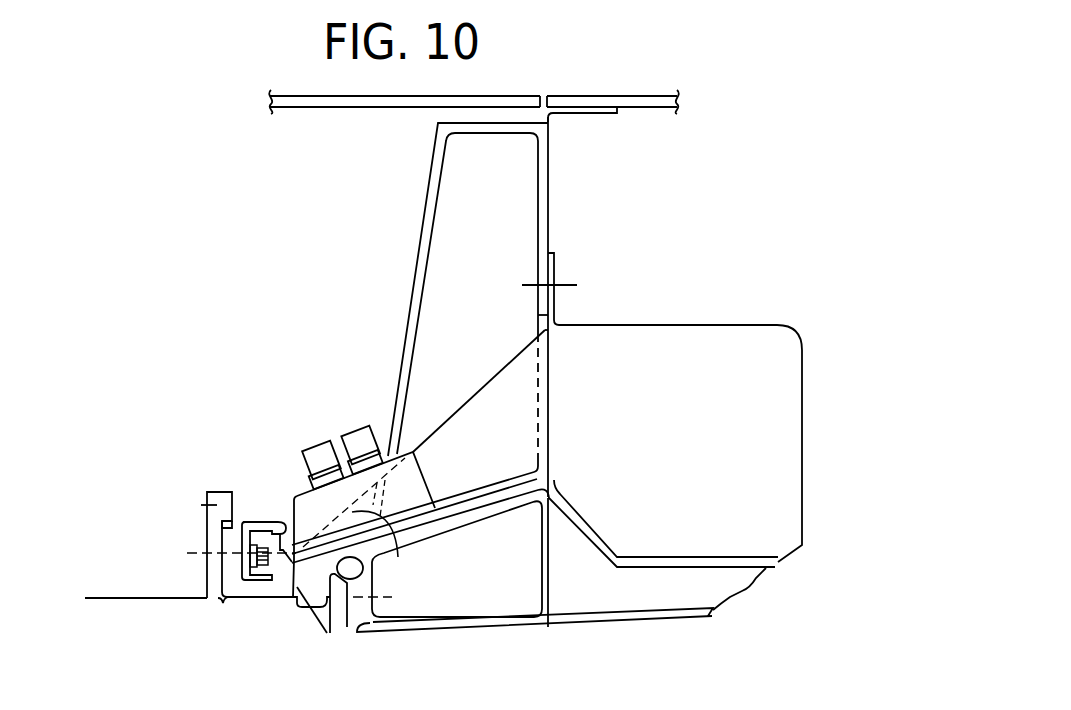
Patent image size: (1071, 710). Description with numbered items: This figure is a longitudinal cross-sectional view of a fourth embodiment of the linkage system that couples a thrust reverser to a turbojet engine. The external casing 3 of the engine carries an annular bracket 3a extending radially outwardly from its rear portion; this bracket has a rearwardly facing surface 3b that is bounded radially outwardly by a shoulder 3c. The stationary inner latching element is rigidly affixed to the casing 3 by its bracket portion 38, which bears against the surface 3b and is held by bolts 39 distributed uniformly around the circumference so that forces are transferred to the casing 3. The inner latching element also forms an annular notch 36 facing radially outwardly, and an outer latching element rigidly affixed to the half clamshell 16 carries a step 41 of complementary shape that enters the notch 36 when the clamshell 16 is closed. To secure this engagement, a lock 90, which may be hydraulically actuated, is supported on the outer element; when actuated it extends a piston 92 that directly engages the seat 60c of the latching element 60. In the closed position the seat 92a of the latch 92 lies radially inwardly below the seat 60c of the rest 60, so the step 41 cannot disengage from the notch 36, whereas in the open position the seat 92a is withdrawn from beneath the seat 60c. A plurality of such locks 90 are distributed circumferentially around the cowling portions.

The half clamshell 16 is at (603, 252).
The external casing 3 is at (121, 597).
The annular bracket 3a is at (215, 506).
The rearwardly facing surface 3b is at (223, 604).
The shoulder 3c is at (227, 528).
The bolt 39 is at (247, 551).
The latching element 60 is at (242, 520).
The seat 60c is at (248, 520).
The seat 92a is at (289, 515).
The piston 92 is at (283, 582).
The step 41 is at (308, 586).
The annular notch 36 is at (330, 612).
The bracket portion 38 is at (344, 629).
The lock 90 is at (392, 543).